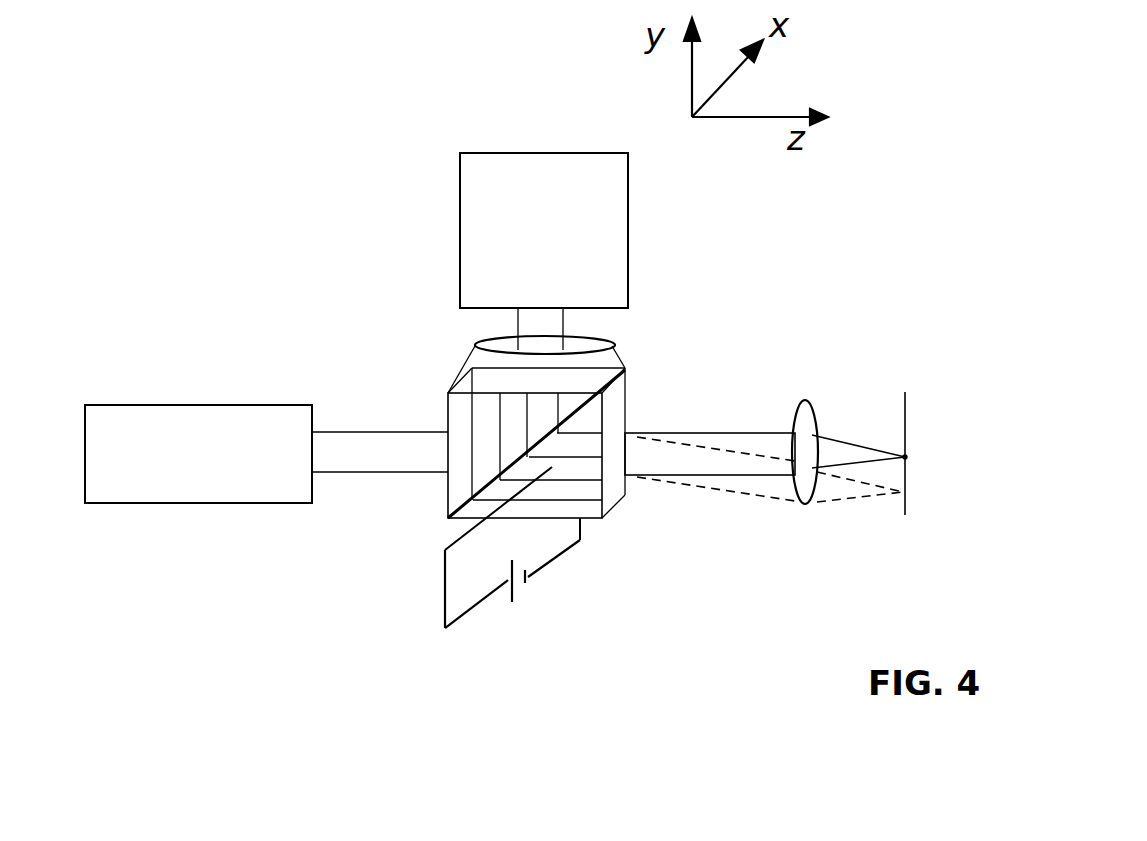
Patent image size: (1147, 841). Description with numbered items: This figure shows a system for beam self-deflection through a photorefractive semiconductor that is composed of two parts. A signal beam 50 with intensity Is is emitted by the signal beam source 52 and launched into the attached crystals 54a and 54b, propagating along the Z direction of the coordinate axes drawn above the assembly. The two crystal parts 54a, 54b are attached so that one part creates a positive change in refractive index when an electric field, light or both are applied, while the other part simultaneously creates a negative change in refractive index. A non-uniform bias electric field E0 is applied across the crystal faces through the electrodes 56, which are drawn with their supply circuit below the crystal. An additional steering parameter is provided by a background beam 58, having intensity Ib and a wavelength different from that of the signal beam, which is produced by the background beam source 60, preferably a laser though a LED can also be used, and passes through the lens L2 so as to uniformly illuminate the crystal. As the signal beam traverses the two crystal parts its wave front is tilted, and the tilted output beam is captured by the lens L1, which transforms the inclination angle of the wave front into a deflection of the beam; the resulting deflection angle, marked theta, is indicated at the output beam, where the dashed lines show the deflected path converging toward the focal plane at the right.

The signal beam 50 is at (400, 423).
The signal beam source 52 is at (248, 397).
The first photorefractive crystal part 54a is at (443, 483).
The second photorefractive crystal part 54b is at (593, 467).
The electrodes 56 is at (593, 520).
The background beam 58 is at (563, 323).
The background beam source 60 is at (633, 218).
The lens L1 is at (792, 410).
The lens L2 is at (475, 342).
The bias electric field E0 is at (553, 607).
The deflection angle theta is at (722, 450).